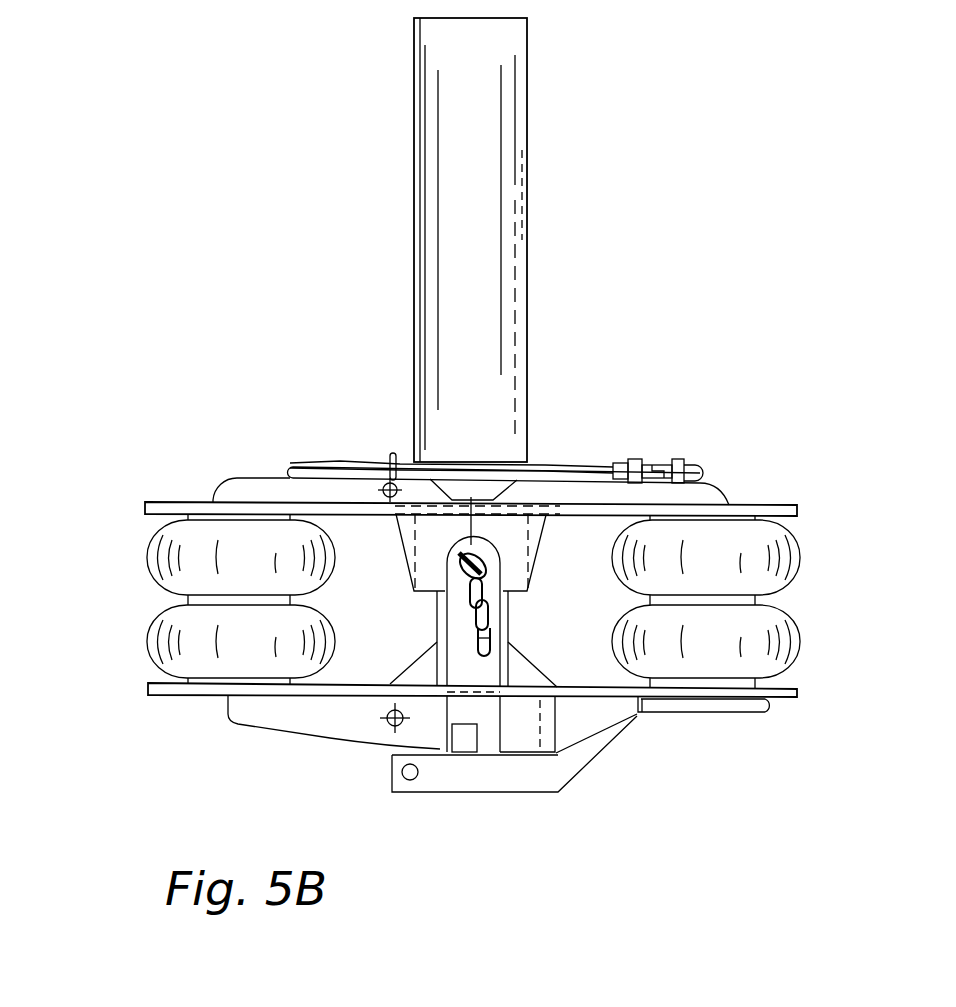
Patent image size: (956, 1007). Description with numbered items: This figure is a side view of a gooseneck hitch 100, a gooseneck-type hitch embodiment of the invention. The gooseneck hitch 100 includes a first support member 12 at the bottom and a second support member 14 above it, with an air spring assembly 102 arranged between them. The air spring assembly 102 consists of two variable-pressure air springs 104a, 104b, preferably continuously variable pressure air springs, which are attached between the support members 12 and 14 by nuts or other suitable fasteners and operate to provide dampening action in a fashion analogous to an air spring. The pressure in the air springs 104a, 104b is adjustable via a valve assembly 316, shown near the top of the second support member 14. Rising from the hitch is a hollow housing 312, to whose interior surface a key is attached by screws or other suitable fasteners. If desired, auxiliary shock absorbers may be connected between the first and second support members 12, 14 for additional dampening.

The first support member 12 is at (740, 722).
The second support member 14 is at (748, 483).
The gooseneck hitch 100 is at (624, 177).
The air spring assembly 102 is at (600, 565).
The variable-pressure air spring 104a is at (800, 566).
The variable-pressure air spring 104b is at (146, 562).
The hollow housing 312 is at (413, 162).
The valve assembly 316 is at (659, 455).